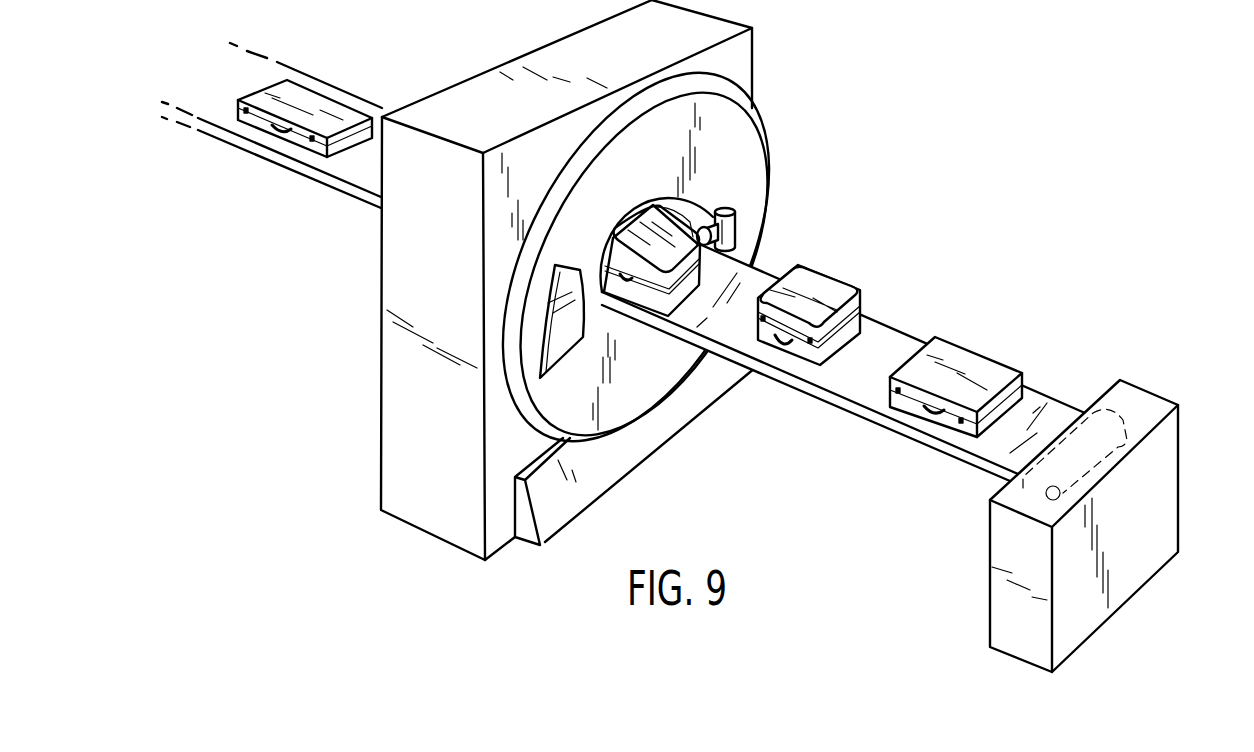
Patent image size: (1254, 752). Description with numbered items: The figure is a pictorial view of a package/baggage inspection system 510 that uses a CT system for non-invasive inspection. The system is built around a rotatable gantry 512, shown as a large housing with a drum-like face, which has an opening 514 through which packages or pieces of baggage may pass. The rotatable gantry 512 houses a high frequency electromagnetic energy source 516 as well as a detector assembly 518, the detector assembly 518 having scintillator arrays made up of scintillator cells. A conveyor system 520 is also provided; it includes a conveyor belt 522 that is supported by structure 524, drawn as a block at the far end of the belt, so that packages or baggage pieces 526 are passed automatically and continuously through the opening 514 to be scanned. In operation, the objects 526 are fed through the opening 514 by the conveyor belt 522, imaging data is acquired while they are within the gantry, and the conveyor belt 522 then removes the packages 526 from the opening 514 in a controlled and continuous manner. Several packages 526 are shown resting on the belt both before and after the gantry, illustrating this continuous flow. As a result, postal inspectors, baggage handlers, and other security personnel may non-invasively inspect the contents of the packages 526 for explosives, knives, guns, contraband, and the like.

The package/baggage inspection system 510 is at (991, 163).
The rotatable gantry 512 is at (749, 152).
The opening 514 is at (660, 217).
The high frequency electromagnetic energy source 516 is at (737, 223).
The detector assembly 518 is at (560, 352).
The conveyor system 520 is at (154, 143).
The conveyor belt 522 is at (338, 168).
The structure 524 is at (1167, 492).
The packages or baggage pieces 526 is at (318, 102).